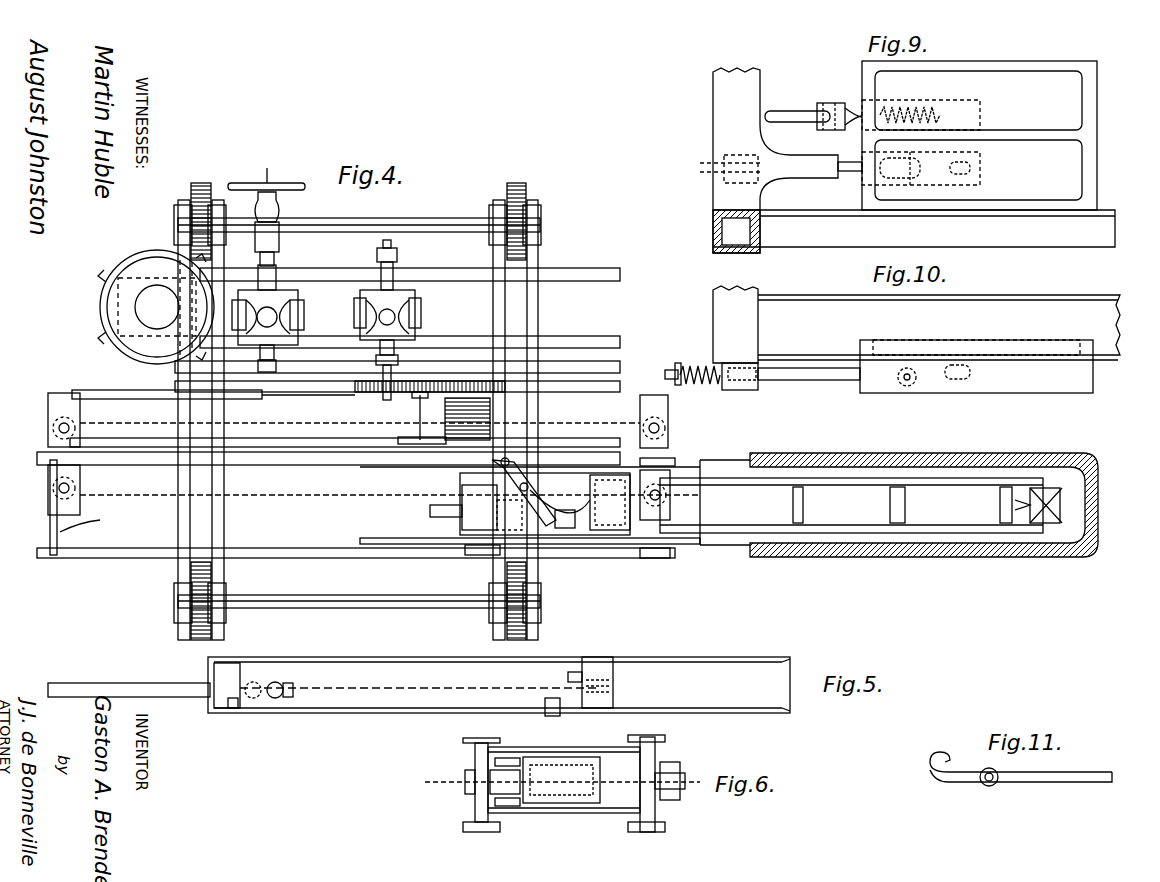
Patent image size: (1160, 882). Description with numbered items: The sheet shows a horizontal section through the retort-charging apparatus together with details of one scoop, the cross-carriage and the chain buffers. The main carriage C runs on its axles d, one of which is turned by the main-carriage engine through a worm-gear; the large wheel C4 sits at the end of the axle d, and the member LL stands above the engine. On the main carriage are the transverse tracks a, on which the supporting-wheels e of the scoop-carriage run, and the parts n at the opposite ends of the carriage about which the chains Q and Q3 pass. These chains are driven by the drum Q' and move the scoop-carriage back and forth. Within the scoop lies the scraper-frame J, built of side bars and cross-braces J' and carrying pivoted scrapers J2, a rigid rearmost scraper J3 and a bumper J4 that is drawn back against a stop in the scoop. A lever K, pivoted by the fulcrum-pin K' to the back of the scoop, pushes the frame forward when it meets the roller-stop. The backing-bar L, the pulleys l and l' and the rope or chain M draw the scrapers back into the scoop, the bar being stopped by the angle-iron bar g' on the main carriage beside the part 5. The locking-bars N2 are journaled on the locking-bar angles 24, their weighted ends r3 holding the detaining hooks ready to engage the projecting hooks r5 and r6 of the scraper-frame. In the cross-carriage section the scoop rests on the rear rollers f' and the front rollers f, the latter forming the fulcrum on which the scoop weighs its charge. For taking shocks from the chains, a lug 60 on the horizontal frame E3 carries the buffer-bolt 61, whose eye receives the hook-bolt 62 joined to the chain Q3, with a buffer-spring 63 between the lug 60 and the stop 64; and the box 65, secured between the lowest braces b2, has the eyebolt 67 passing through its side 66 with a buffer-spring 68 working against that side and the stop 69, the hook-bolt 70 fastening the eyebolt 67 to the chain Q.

In FIG. 4, the axle d is at (455, 220).
In FIG. 4, the handwheel LL is at (267, 168).
In FIG. 4, the main carriage C is at (622, 277).
In FIG. 4, the wheel C4 is at (130, 350).
In FIG. 4, the tracks a is at (143, 452).
In FIG. 4, the bearing box n is at (678, 494).
In FIG. 4, the chain Q3 is at (576, 421).
In FIG. 6, the chain Q3 is at (700, 785).
In FIG. 4, the chain Q is at (390, 485).
In FIG. 6, the chain Q is at (552, 780).
In FIG. 4, the locking-bar angle 24 is at (228, 460).
In FIG. 4, the locking-bar N2 is at (378, 466).
In FIG. 4, the angle-iron bar g' is at (38, 521).
In FIG. 4, the lever 5 is at (87, 519).
In FIG. 4, the drum Q' is at (422, 418).
In FIG. 4, the fulcrum-pin K' is at (482, 419).
In FIG. 4, the lever K is at (530, 496).
In FIG. 4, the supporting-wheel e is at (462, 550).
In FIG. 4, the scraper-frame J is at (851, 505).
In FIG. 4, the rearmost scraper J3 is at (805, 495).
In FIG. 4, the cross-brace J' is at (942, 505).
In FIG. 4, the scraper J2 is at (920, 505).
In FIG. 5, the backing-bar L is at (129, 682).
In FIG. 5, the pulley l is at (252, 709).
In FIG. 5, the pulley l' is at (279, 709).
In FIG. 5, the wire, rope, or chain M is at (420, 681).
In FIG. 5, the bumper J4 is at (568, 678).
In FIG. 5, the projecting hook r5 is at (595, 673).
In FIG. 5, the projecting hook r6 is at (603, 660).
In FIG. 5, the locking-bar end r3 is at (539, 718).
In FIG. 6, the lowest brace b2 is at (600, 750).
In FIG. 9, the lowest brace b2 is at (914, 231).
In FIG. 6, the box 65 is at (600, 770).
In FIG. 9, the box 65 is at (1097, 188).
In FIG. 6, the horizontal frame E3 is at (492, 765).
In FIG. 9, the horizontal frame E3 is at (775, 139).
In FIG. 6, the rear roller f' is at (455, 785).
In FIG. 6, the front roller f is at (674, 784).
In FIG. 9, the lug 60 is at (730, 155).
In FIG. 10, the lug 60 is at (748, 392).
In FIG. 9, the buffer-bolt 61 is at (844, 182).
In FIG. 10, the buffer-bolt 61 is at (808, 382).
In FIG. 9, the hook-bolt 70 is at (790, 110).
In FIG. 9, the eyebolt 67 is at (850, 126).
In FIG. 11, the eyebolt 67 is at (1033, 780).
In FIG. 9, the side of box 66 is at (862, 82).
In FIG. 10, the side of box 66 is at (862, 392).
In FIG. 9, the buffer-spring 68 is at (921, 100).
In FIG. 9, the stop 69 is at (937, 113).
In FIG. 9, the hook-bolt 62 is at (972, 172).
In FIG. 10, the hook-bolt 62 is at (976, 377).
In FIG. 10, the buffer-spring 63 is at (686, 388).
In FIG. 10, the stop 64 is at (678, 364).